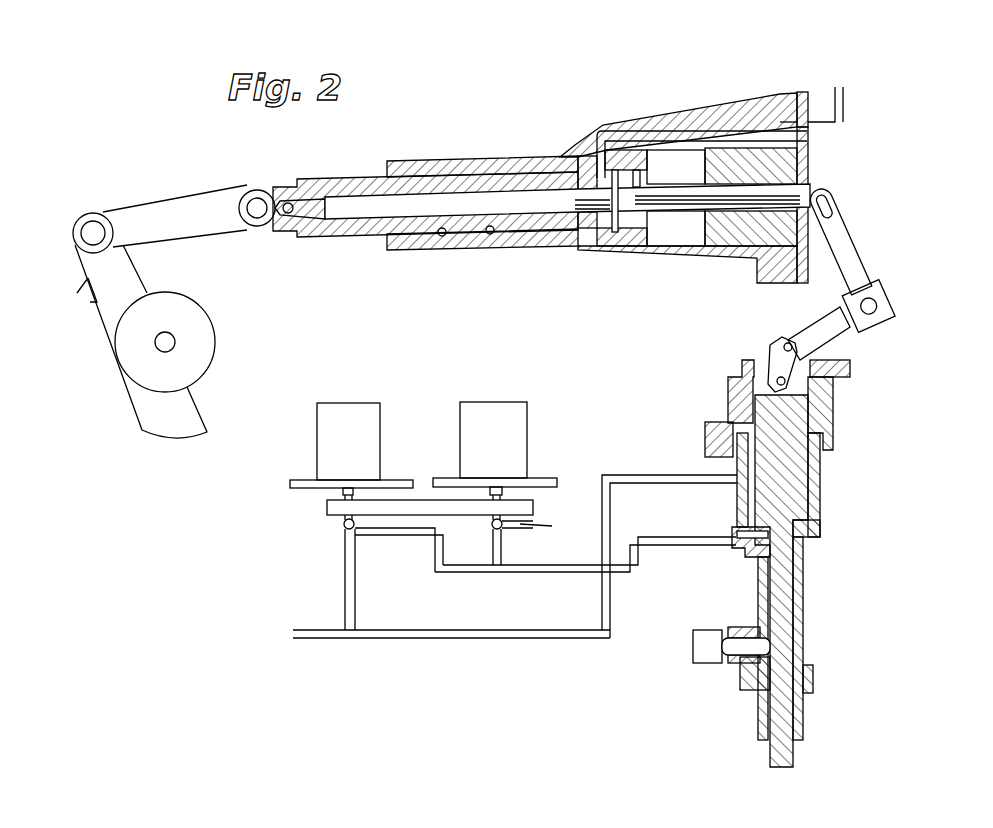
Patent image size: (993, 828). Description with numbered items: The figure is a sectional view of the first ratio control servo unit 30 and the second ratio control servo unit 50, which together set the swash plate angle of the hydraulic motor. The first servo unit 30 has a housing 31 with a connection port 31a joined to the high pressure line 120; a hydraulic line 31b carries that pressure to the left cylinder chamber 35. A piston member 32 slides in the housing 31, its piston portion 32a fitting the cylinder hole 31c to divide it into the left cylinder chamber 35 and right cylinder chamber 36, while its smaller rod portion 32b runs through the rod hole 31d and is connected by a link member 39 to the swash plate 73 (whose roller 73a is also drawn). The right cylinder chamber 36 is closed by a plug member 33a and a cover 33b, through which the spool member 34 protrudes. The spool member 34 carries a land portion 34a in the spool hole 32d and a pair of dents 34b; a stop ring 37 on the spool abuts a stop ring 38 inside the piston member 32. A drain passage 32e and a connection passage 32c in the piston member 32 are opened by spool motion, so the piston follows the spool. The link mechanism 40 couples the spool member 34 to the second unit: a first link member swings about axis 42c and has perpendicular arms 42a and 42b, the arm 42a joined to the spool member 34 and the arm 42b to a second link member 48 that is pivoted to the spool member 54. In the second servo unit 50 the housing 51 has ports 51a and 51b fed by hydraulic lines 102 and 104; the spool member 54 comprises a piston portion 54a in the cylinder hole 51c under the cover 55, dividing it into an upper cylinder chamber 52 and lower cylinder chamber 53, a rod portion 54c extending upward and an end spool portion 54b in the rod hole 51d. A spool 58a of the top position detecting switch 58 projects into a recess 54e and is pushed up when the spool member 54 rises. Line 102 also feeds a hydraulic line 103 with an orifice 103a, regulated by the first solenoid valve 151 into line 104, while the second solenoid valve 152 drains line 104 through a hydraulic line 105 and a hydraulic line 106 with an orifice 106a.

The first ratio control servo unit 30 is at (535, 94).
The housing 31 is at (438, 160).
The connection port 31a is at (818, 107).
The hydraulic line 31b is at (687, 117).
The cylinder hole 31c is at (697, 270).
The rod hole 31d is at (448, 240).
The piston member 32 is at (328, 178).
The piston portion 32a is at (602, 250).
The rod portion 32b is at (368, 238).
The connection passage 32c is at (565, 170).
The spool hole 32d is at (492, 228).
The drain passage 32e is at (560, 240).
The plug member 33a is at (788, 172).
The cover 33b is at (810, 141).
The spool member 34 is at (650, 214).
The land portion 34a is at (552, 200).
The dents 34b is at (578, 158).
The left cylinder chamber 35 is at (588, 262).
The right cylinder chamber 36 is at (676, 198).
The stop ring 37 is at (624, 245).
The stop ring 38 is at (640, 250).
The link member 39 is at (166, 204).
The link mechanism 40 is at (888, 272).
The arm 42a is at (845, 246).
The arm 42b is at (828, 337).
The axis 42c is at (838, 309).
The second link member 48 is at (777, 344).
The second ratio control servo unit 50 is at (860, 544).
The housing 51 is at (818, 488).
The port 51a is at (735, 463).
The port 51b is at (732, 543).
The cylinder hole 51c is at (817, 453).
The rod hole 51d is at (807, 573).
The upper cylinder chamber 52 is at (740, 490).
The lower cylinder chamber 53 is at (736, 524).
The spool member 54 is at (790, 483).
The piston portion 54a is at (808, 523).
The end spool portion 54b is at (788, 604).
The rod portion 54c is at (823, 402).
The recess 54e is at (803, 662).
The cover 55 is at (727, 386).
The top position detecting switch 58 is at (713, 658).
The spool 58a is at (745, 654).
The swash plate 73 is at (185, 430).
The cam roller 73a is at (175, 342).
The hydraulic line 102 is at (485, 634).
The hydraulic line 103 is at (350, 594).
The orifice 103a is at (357, 557).
The hydraulic line 104 is at (522, 568).
The hydraulic line 105 is at (493, 552).
The hydraulic line 106 is at (547, 520).
The orifice 106a is at (520, 530).
The high pressure line 120 is at (847, 96).
The first duty-ratio-controlled solenoid valve 151 is at (370, 400).
The second duty-ratio-controlled solenoid valve 152 is at (515, 400).